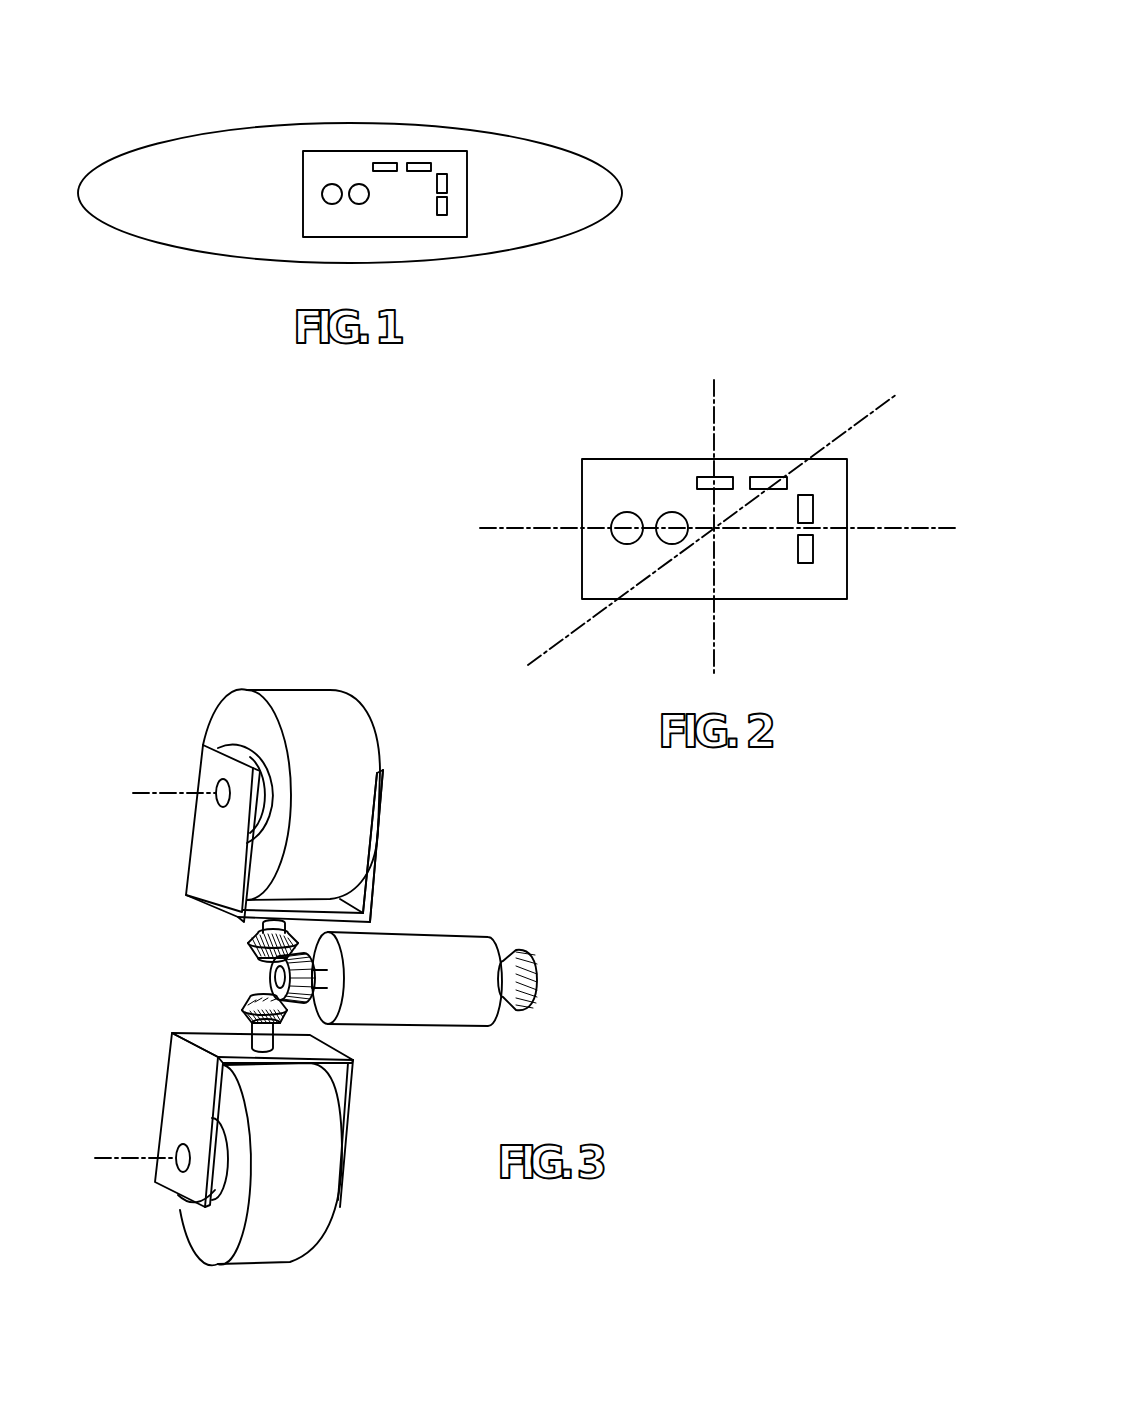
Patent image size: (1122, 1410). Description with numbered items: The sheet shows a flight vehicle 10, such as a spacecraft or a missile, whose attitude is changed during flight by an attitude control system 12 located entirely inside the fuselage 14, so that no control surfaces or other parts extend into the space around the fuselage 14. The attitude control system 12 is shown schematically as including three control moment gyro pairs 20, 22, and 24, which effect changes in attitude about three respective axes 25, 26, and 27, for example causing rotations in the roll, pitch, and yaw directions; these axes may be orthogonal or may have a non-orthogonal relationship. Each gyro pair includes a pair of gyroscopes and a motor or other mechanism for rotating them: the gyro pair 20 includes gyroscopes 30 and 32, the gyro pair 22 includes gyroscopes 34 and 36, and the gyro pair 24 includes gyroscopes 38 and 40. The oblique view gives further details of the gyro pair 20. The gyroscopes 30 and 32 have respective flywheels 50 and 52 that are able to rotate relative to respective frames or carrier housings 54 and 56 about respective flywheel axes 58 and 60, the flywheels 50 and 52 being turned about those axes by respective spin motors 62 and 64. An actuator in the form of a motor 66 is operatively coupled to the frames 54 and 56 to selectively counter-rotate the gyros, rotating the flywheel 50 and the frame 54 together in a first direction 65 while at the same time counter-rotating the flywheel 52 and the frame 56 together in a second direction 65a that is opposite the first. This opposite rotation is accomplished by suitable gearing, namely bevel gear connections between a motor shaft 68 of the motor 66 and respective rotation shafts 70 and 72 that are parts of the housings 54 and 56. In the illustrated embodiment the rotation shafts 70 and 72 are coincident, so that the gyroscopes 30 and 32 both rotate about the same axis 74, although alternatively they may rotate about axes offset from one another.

In FIG. 1, the flight vehicle 10 is at (134, 127).
In FIG. 1, the attitude control system 12 is at (440, 150).
In FIG. 2, the attitude control system 12 is at (603, 433).
In FIG. 1, the fuselage 14 is at (335, 123).
In FIG. 2, the control moment gyro pair 20 is at (598, 541).
In FIG. 3, the control moment gyro pair 20 is at (100, 696).
In FIG. 2, the control moment gyro pair 22 is at (745, 429).
In FIG. 2, the control moment gyro pair 24 is at (869, 513).
In FIG. 2, the axis 25 is at (543, 527).
In FIG. 2, the axis 26 is at (714, 390).
In FIG. 2, the axis 27 is at (854, 426).
In FIG. 2, the gyroscope 30 is at (615, 540).
In FIG. 3, the gyroscope 30 is at (246, 826).
In FIG. 2, the gyroscope 32 is at (670, 545).
In FIG. 3, the gyroscope 32 is at (242, 1123).
In FIG. 2, the gyroscope 34 is at (703, 477).
In FIG. 2, the gyroscope 36 is at (757, 477).
In FIG. 2, the gyroscope 38 is at (803, 494).
In FIG. 2, the gyroscope 40 is at (815, 547).
In FIG. 3, the flywheel 50 is at (298, 777).
In FIG. 3, the flywheel 52 is at (256, 1164).
In FIG. 3, the frame 54 is at (378, 882).
In FIG. 3, the frame 56 is at (352, 1103).
In FIG. 3, the flywheel axis 58 is at (158, 790).
In FIG. 3, the flywheel axis 60 is at (118, 1160).
In FIG. 3, the spin motor 62 is at (240, 714).
In FIG. 3, the spin motor 64 is at (200, 1185).
In FIG. 3, the first direction 65 is at (330, 640).
In FIG. 3, the second direction 65a is at (201, 1319).
In FIG. 3, the motor 66 is at (467, 937).
In FIG. 3, the motor shaft 68 is at (320, 980).
In FIG. 3, the rotation shaft 70 is at (262, 925).
In FIG. 3, the rotation shaft 72 is at (253, 1042).
In FIG. 3, the axis 74 is at (270, 980).